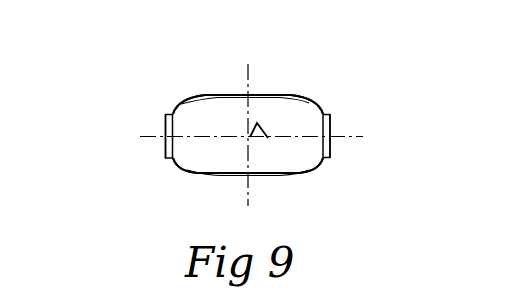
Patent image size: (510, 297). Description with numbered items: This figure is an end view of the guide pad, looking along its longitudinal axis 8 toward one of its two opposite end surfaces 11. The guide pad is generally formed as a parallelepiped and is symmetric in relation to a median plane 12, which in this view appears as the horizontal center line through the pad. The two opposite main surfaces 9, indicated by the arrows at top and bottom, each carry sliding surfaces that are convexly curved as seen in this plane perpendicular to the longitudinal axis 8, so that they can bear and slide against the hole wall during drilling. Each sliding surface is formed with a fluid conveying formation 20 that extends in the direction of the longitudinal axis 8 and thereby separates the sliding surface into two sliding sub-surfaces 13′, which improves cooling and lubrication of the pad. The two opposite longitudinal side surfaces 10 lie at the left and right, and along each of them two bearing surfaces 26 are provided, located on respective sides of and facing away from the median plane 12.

The end surface 11 is at (226, 126).
The median plane 12 is at (140, 136).
The longitudinal side surface 10 is at (165, 129).
The bearing surface 26 is at (167, 115).
The fluid conveying formation 20 is at (240, 94).
The sliding sub-surface 13′ is at (202, 95).
The longitudinal axis 8 is at (262, 130).
The main surface 9 is at (271, 76).